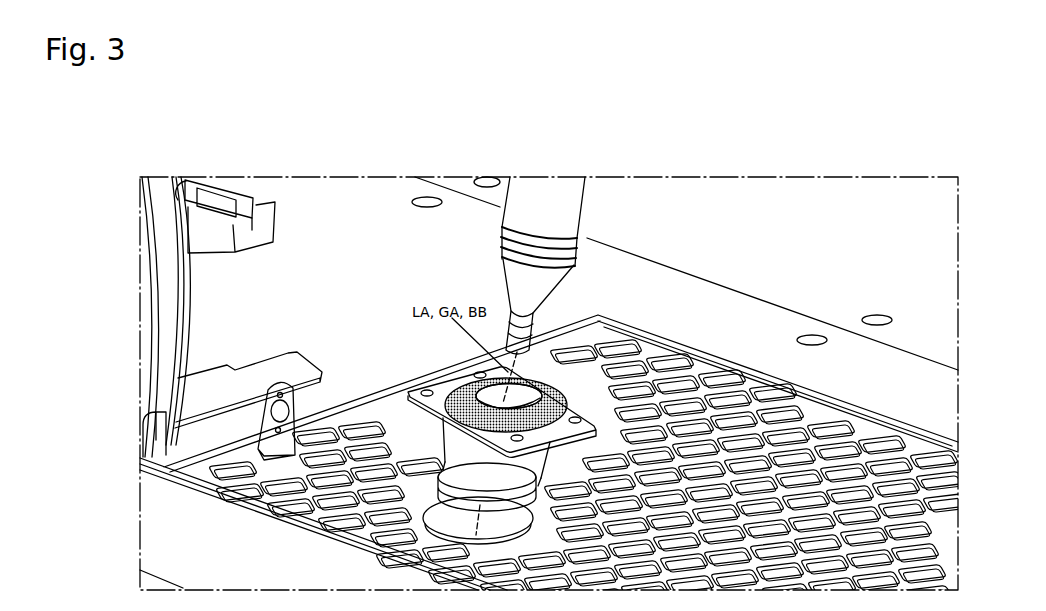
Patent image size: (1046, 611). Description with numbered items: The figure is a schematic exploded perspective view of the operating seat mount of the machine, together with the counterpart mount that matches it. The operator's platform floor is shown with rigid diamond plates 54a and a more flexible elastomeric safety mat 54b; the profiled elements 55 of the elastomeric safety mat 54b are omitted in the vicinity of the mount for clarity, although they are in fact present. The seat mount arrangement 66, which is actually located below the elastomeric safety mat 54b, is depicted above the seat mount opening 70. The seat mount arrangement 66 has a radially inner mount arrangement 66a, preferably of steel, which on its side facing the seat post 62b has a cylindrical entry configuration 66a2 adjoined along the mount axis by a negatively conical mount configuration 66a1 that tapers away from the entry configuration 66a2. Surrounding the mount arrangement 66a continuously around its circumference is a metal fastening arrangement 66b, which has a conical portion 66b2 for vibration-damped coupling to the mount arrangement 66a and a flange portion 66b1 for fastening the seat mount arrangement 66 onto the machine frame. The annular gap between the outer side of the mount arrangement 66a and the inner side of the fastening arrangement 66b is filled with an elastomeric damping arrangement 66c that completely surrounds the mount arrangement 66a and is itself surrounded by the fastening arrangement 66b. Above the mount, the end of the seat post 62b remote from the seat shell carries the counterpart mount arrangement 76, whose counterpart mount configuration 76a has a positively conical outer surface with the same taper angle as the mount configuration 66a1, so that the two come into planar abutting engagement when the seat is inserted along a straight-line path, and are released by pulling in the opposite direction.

The diamond plate 54a is at (818, 290).
The elastomeric safety mat 54b is at (808, 405).
The profiled elements 55 is at (555, 463).
The seat post 62b is at (544, 190).
The counterpart mount arrangement 76 is at (506, 290).
The counterpart mount configuration 76a is at (540, 290).
The seat mount arrangement 66 is at (484, 420).
The mount arrangement 66a is at (469, 380).
The mount configuration 66a1 is at (556, 397).
The entry configuration 66a2 is at (536, 388).
The fastening arrangement 66b is at (545, 472).
The flange portion 66b1 is at (438, 396).
The conical portion 66b2 is at (506, 474).
The elastomeric damping arrangement 66c is at (452, 383).
The seat mount opening 70 is at (448, 509).